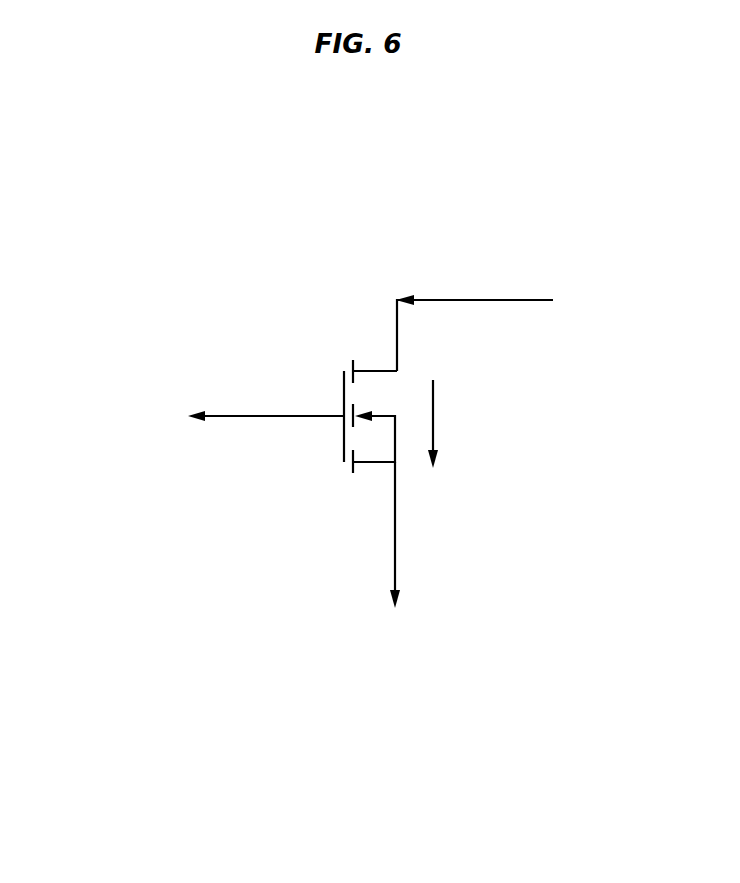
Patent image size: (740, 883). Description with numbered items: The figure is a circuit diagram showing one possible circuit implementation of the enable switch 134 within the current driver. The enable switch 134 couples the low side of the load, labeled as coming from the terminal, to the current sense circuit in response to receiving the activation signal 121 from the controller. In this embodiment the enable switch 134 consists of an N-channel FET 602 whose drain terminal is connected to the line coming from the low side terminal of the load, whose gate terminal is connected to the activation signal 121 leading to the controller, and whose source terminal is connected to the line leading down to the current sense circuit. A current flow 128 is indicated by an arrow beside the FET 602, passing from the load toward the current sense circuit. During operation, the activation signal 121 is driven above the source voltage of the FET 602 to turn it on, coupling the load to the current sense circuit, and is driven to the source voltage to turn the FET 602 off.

The enable switch 134 is at (506, 168).
The N-channel FET 602 is at (344, 402).
The activation signal 121 is at (243, 417).
The current flow 128 is at (434, 408).